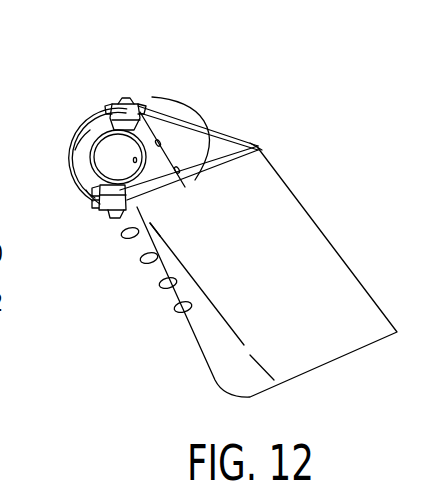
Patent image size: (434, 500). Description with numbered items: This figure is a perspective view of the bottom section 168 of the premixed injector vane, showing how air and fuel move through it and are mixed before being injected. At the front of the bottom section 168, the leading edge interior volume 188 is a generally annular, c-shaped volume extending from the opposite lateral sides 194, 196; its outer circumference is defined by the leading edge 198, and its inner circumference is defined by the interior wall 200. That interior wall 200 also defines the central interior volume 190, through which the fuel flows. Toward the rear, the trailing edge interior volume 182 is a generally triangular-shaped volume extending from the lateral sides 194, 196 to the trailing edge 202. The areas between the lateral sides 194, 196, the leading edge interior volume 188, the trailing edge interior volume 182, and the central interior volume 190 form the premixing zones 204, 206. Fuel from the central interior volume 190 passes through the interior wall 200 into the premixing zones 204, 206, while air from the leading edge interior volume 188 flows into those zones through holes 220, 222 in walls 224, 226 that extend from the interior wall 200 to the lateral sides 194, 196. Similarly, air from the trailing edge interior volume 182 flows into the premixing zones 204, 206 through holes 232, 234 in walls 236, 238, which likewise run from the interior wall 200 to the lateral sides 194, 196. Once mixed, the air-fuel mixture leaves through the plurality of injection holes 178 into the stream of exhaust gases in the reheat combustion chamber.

The bottom section 168 is at (318, 78).
The injection holes 178 is at (183, 313).
The trailing edge interior volume 182 is at (235, 130).
The leading edge interior volume 188 is at (77, 172).
The central interior volume 190 is at (110, 155).
The lateral side 194 is at (138, 108).
The lateral side 196 is at (105, 213).
The leading edge 198 is at (82, 141).
The interior wall 200 is at (80, 183).
The trailing edge 202 is at (257, 147).
The premixing zone 204 is at (127, 107).
The premixing zone 206 is at (112, 210).
The hole 220 is at (100, 108).
The hole 222 is at (90, 192).
The wall 224 is at (115, 100).
The wall 226 is at (97, 207).
The hole 232 is at (148, 110).
The hole 234 is at (163, 183).
The wall 236 is at (147, 108).
The wall 238 is at (153, 225).